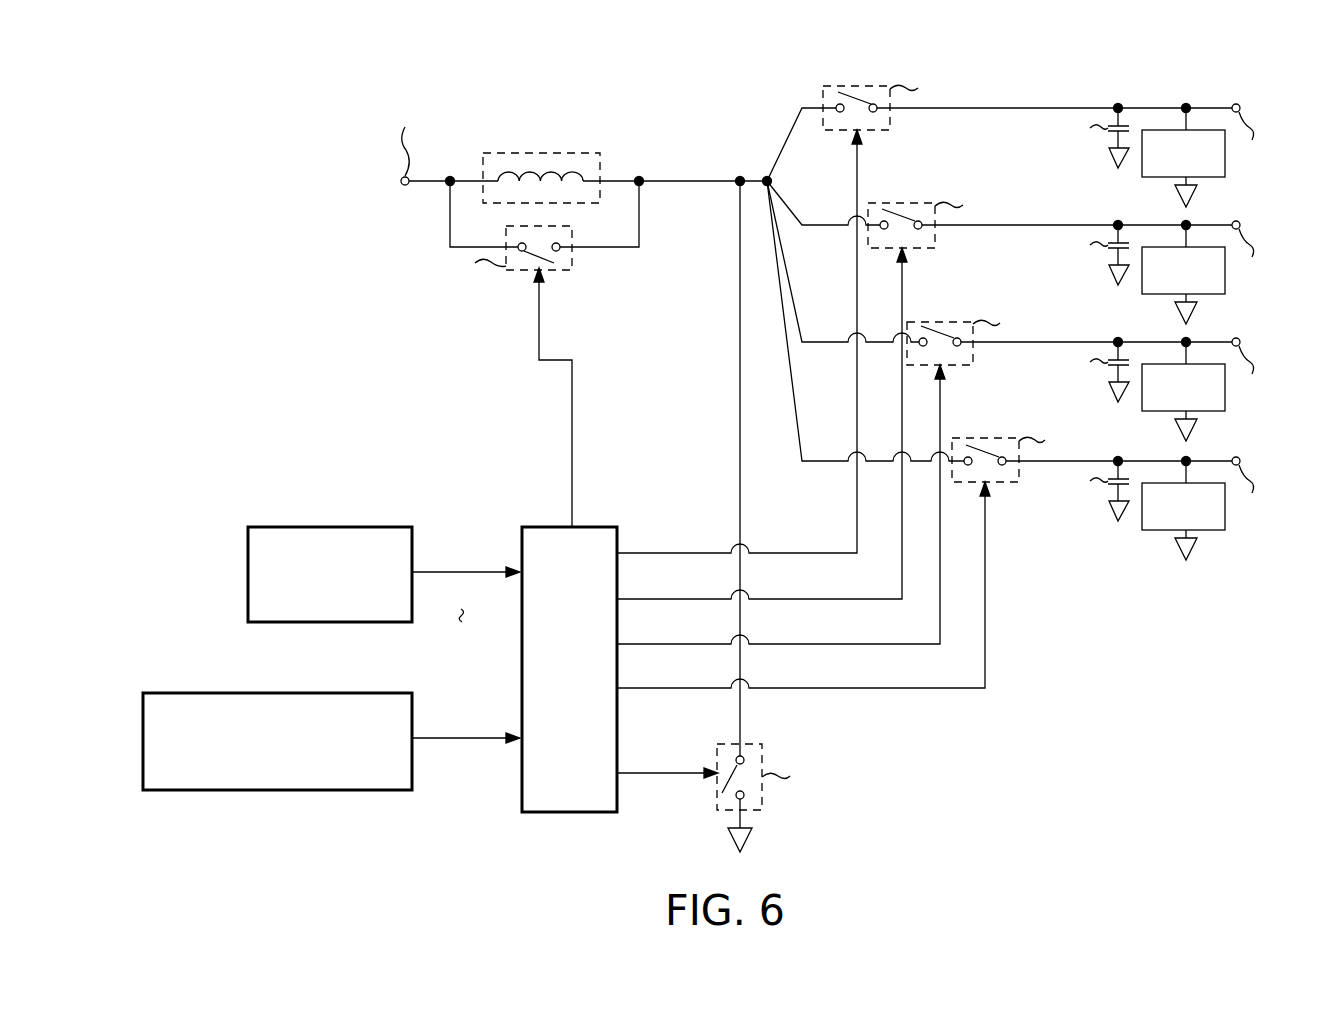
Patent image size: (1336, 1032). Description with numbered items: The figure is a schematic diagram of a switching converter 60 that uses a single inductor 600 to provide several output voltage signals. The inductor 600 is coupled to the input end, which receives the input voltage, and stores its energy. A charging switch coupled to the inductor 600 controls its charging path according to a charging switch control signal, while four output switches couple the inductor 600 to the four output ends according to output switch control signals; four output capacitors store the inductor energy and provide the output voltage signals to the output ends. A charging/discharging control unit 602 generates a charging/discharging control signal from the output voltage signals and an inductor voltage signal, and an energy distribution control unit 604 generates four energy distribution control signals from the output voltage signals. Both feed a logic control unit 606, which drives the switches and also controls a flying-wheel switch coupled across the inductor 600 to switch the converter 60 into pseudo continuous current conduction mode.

The switching converter 60 is at (200, 125).
The inductor 600 is at (567, 153).
The charging/discharging control unit 602 is at (335, 693).
The energy distribution control unit 604 is at (412, 550).
The logic control unit 606 is at (605, 527).